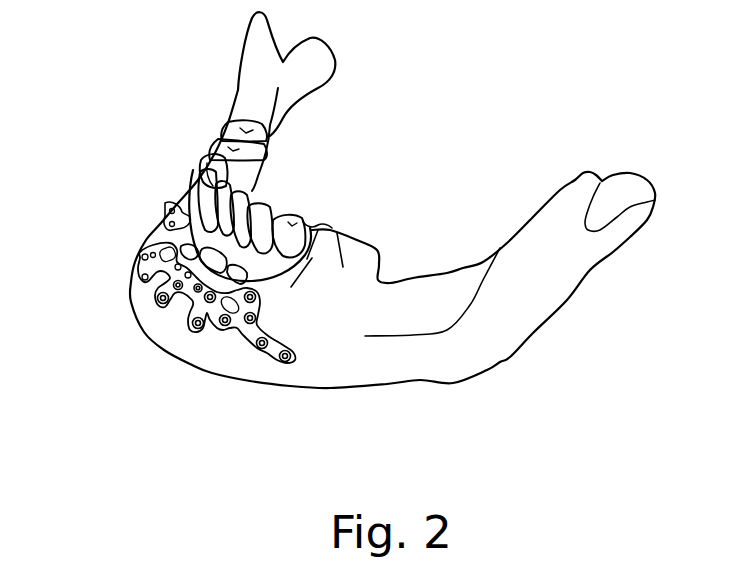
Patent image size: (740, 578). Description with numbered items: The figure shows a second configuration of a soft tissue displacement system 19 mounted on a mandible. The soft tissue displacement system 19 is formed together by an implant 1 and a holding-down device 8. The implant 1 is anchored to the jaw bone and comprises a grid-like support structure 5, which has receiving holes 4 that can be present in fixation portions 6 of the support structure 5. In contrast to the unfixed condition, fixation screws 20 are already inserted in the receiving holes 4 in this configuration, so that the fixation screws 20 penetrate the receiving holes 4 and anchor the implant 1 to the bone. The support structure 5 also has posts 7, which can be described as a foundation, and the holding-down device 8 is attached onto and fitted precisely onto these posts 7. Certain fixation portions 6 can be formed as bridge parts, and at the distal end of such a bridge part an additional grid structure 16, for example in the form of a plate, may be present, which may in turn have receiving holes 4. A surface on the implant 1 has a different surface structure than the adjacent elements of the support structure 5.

The implant 1 is at (293, 332).
The receiving holes 4 is at (287, 359).
The support structure 5 is at (152, 264).
The fixation portions 6 is at (278, 359).
The posts 7 is at (188, 248).
The holding-down device 8 is at (304, 277).
The additional grid structure 16 is at (230, 187).
The soft tissue displacement system 19 is at (350, 310).
The fixation screws 20 is at (196, 325).